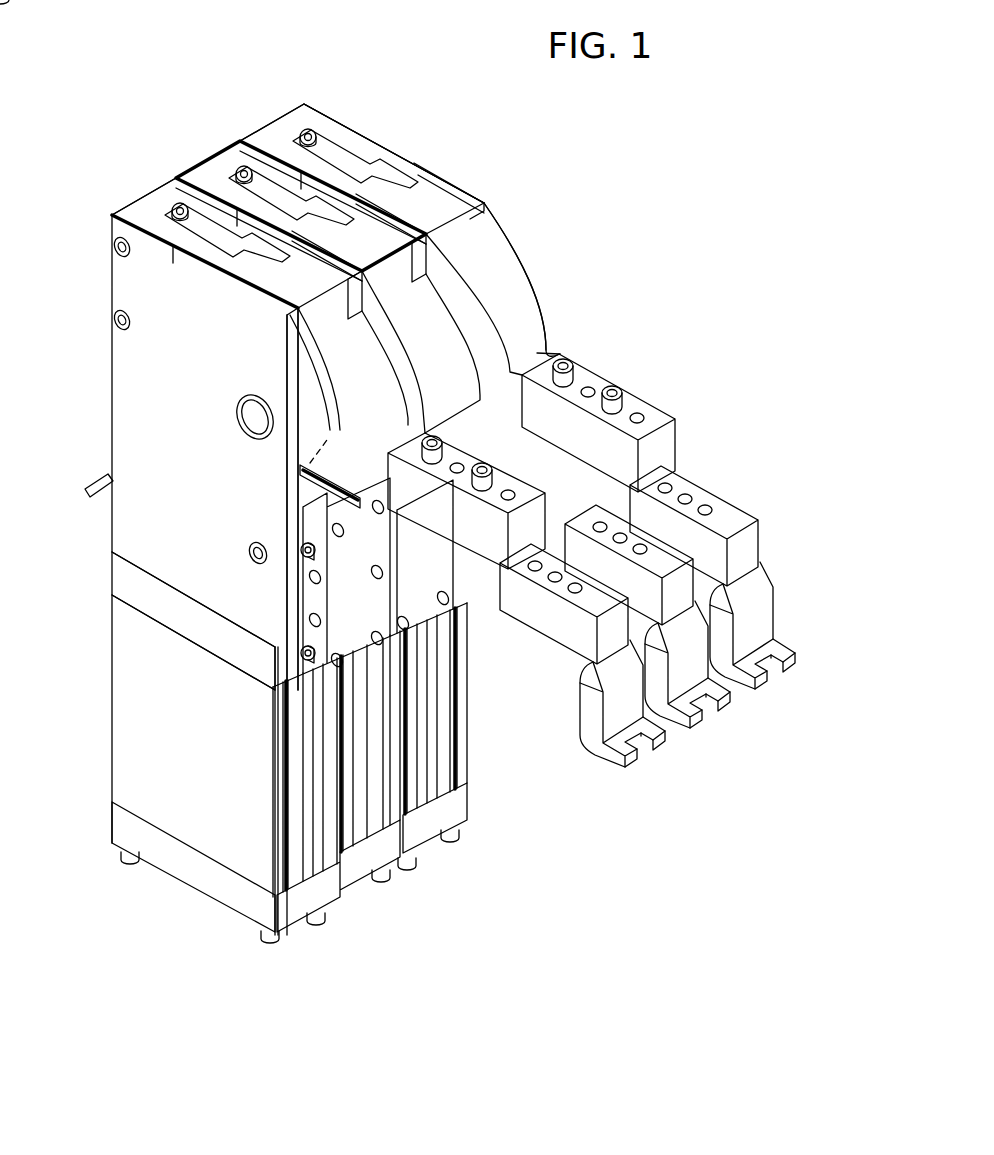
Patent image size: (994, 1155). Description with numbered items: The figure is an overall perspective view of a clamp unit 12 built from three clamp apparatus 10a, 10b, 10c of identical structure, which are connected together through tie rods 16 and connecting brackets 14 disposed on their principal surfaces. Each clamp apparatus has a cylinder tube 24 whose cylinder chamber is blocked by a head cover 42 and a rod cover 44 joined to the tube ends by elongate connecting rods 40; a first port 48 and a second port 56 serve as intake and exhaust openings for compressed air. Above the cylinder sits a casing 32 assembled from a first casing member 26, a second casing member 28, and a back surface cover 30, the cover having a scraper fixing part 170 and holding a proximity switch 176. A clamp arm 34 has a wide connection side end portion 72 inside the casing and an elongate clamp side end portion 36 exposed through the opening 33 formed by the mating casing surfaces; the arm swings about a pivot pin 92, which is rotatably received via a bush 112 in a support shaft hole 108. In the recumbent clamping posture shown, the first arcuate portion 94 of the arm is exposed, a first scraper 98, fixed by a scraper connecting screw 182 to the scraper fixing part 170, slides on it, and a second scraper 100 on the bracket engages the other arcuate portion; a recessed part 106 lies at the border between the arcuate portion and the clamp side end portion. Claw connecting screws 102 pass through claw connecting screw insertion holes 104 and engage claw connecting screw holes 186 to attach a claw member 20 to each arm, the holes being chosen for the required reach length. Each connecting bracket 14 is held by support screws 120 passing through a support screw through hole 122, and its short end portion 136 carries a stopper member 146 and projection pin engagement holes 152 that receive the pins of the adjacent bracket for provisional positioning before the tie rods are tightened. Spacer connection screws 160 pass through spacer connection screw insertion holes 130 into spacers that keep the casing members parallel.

The clamp apparatus 10a is at (140, 190).
The clamp apparatus 10b is at (232, 152).
The clamp apparatus 10c is at (300, 108).
The clamp unit 12 is at (648, 163).
The connecting bracket 14 is at (305, 607).
The tie rod 16 is at (300, 542).
The claw member 20 is at (618, 713).
The cylinder tube 24 is at (367, 783).
The first casing member 26 is at (130, 420).
The second casing member 28 is at (427, 174).
The back surface cover 30 is at (108, 205).
The casing 32 is at (113, 393).
The opening 33 is at (460, 223).
The clamp arm 34 is at (510, 253).
The clamp side end portion 36 is at (660, 440).
The connecting rod 40 is at (130, 868).
The head cover 42 is at (298, 915).
The rod cover 44 is at (166, 620).
The first port 48 is at (112, 824).
The second port 56 is at (112, 578).
The connection side end portion 72 is at (300, 375).
The pivot pin 92 is at (260, 440).
The first arcuate portion 94 is at (474, 237).
The first scraper 98 is at (375, 175).
The second scraper 100 is at (320, 462).
The claw connecting screw 102 is at (614, 386).
The claw connecting screw insertion hole 104 is at (645, 418).
The recessed part 106 is at (537, 353).
The support shaft hole 108 is at (240, 426).
The bush 112 is at (240, 402).
The support screw 120 is at (248, 550).
The support screw through hole 122 is at (256, 562).
The spacer connection screw insertion hole 130 is at (120, 260).
The short end portion 136 is at (305, 482).
The stopper member 146 is at (330, 478).
The projection pin engagement hole 152 is at (322, 622).
The spacer connection screw 160 is at (112, 247).
The scraper fixing part 170 is at (236, 128).
The proximity switch 176 is at (110, 461).
The scraper connecting screw 182 is at (178, 202).
The claw connecting screw hole 186 is at (556, 580).